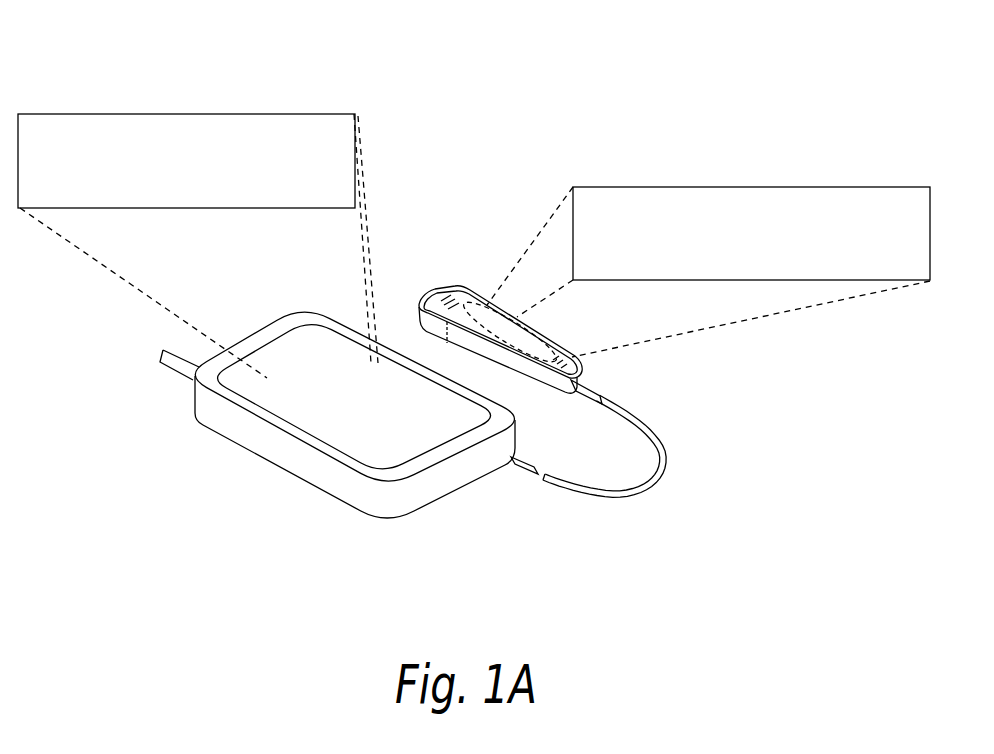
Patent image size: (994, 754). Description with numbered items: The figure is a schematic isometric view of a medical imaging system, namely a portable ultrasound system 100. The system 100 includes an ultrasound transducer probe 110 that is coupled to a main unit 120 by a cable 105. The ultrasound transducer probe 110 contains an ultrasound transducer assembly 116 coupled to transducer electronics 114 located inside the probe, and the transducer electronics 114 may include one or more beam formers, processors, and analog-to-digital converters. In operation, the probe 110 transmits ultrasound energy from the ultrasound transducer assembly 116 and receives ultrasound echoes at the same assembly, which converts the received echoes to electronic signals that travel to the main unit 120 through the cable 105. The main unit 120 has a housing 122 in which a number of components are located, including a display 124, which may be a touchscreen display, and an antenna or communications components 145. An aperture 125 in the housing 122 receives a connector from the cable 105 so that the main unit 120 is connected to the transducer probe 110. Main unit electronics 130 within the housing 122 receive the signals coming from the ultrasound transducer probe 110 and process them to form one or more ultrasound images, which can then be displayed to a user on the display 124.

The portable ultrasound system 100 is at (440, 180).
The cable 105 is at (665, 457).
The ultrasound transducer probe 110 is at (661, 254).
The transducer electronics 114 is at (777, 186).
The ultrasound transducer assembly 116 is at (443, 297).
The main unit 120 is at (299, 441).
The housing 122 is at (327, 482).
The display 124 is at (238, 388).
The aperture 125 is at (515, 466).
The main unit electronics 130 is at (90, 113).
The communications components 145 is at (158, 362).